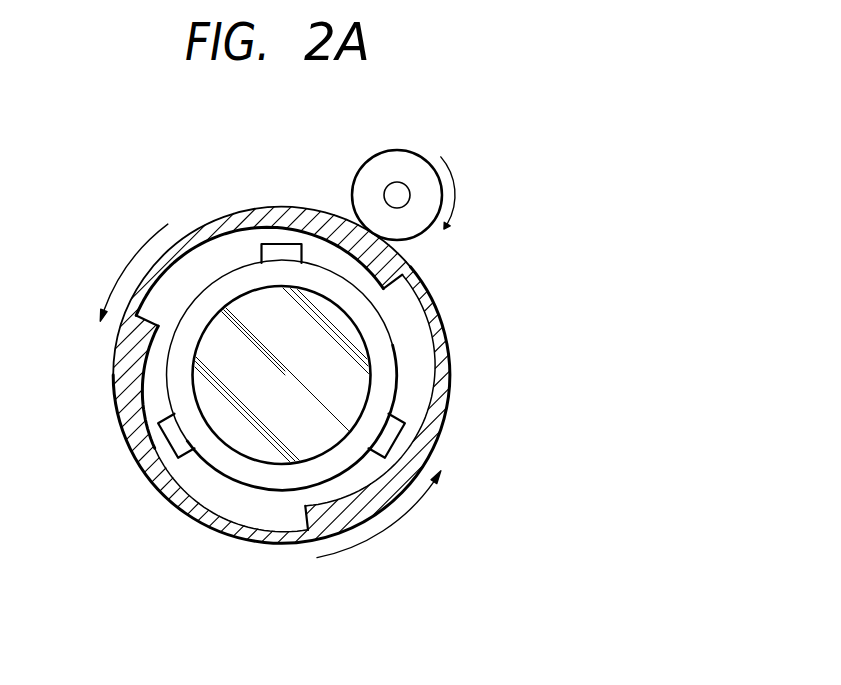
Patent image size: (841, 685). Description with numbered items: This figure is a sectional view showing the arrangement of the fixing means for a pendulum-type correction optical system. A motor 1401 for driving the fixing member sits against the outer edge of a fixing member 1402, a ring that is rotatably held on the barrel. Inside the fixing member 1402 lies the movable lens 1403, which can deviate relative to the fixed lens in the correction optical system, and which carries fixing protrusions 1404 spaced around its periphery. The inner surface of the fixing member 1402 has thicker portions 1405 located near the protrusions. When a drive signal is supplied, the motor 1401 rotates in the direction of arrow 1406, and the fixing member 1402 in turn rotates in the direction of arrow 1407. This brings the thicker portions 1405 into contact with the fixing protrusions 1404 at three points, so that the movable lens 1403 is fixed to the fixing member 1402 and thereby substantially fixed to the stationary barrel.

The motor 1401 is at (417, 151).
The fixing member 1402 is at (453, 313).
The movable lens 1403 is at (397, 370).
The fixing protrusion 1404 is at (283, 246).
The thicker portion 1405 is at (137, 317).
The arrow 1406 is at (468, 178).
The arrow 1407 is at (122, 272).